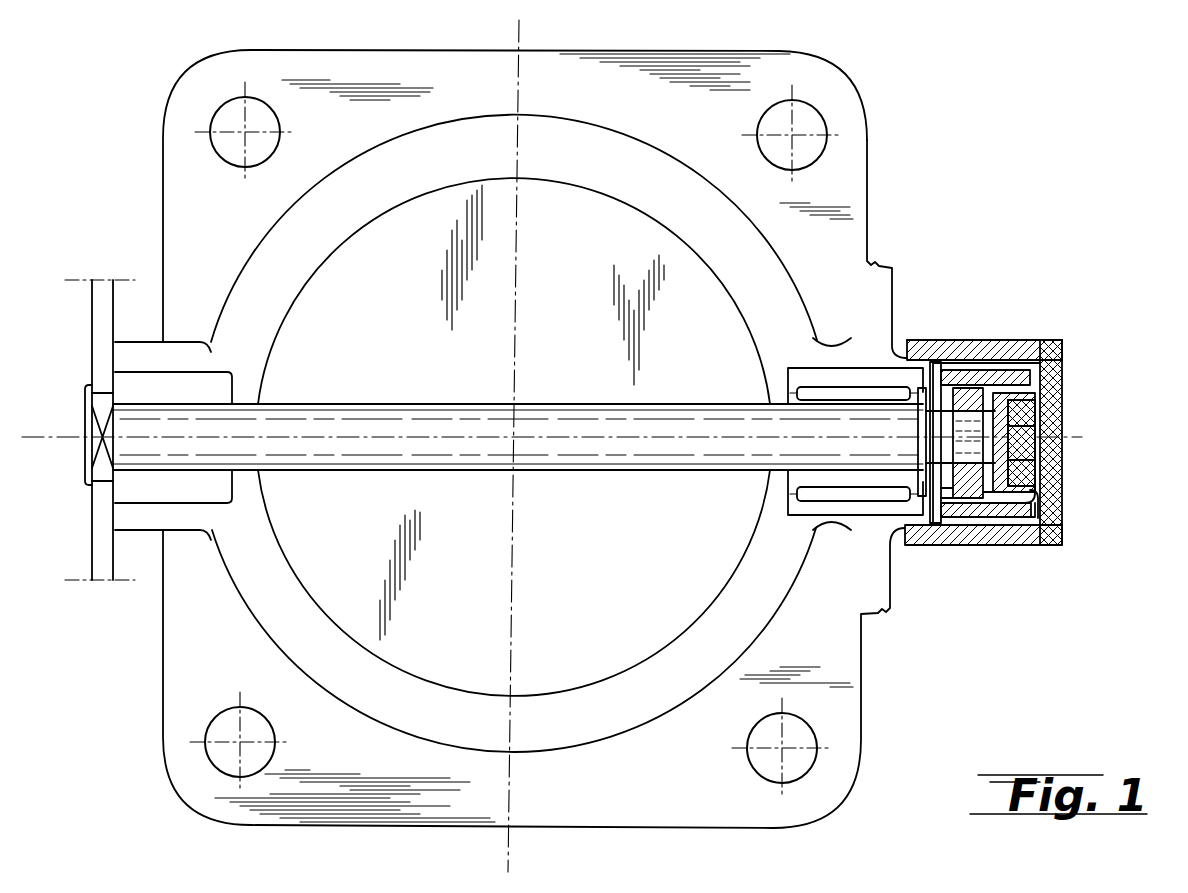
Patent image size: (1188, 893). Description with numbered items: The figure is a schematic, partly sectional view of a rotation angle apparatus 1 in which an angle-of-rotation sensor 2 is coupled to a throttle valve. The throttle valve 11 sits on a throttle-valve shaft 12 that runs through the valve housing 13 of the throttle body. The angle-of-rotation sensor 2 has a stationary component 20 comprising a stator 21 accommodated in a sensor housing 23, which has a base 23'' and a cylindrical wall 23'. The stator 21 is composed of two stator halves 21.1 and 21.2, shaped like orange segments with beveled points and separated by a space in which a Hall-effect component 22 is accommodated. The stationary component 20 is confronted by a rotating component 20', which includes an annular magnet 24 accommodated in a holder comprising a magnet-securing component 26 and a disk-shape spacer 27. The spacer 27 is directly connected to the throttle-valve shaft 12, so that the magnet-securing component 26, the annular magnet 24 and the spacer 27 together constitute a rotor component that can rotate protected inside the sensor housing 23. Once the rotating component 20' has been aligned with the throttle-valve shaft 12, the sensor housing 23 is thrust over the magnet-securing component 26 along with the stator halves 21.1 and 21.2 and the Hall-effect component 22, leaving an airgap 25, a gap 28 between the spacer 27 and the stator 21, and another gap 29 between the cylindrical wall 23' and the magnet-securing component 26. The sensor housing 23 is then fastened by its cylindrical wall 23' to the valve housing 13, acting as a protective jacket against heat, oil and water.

The rotation angle apparatus 1 is at (882, 216).
The angle-of-rotation sensor 2 is at (943, 284).
The throttle valve 11 is at (317, 545).
The throttle-valve shaft 12 is at (172, 420).
The valve housing 13 is at (850, 122).
The stationary component 20 is at (1064, 442).
The rotating component 20' is at (1025, 566).
The stator 21 is at (1080, 376).
The stator half 21.1 is at (1052, 404).
The stator half 21.2 is at (1045, 480).
The Hall-effect component 22 is at (1045, 440).
The sensor housing 23 is at (990, 470).
The cylindrical wall 23' is at (986, 294).
The base 23'' is at (1093, 342).
The annular magnet 24 is at (1040, 500).
The airgap 25 is at (1025, 378).
The magnet-securing component 26 is at (944, 378).
The disk-shape spacer 27 is at (955, 520).
The gap 28 is at (970, 520).
The gap 29 is at (950, 540).